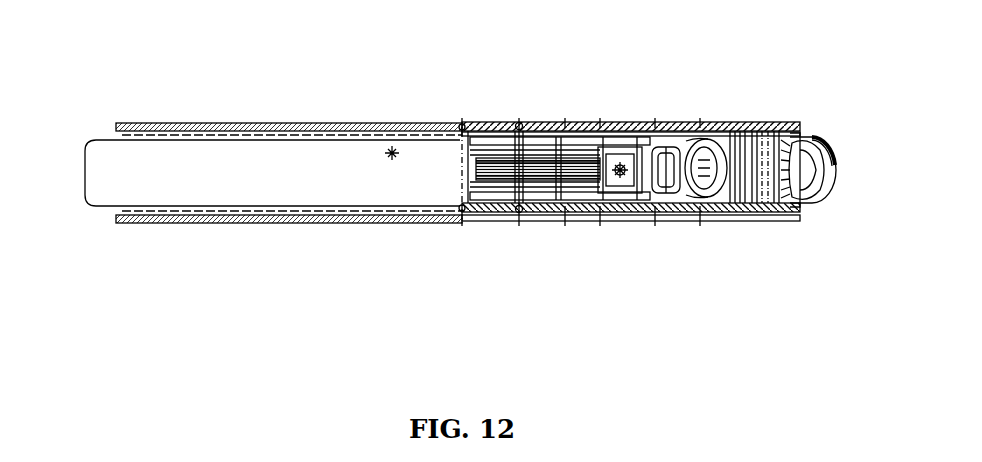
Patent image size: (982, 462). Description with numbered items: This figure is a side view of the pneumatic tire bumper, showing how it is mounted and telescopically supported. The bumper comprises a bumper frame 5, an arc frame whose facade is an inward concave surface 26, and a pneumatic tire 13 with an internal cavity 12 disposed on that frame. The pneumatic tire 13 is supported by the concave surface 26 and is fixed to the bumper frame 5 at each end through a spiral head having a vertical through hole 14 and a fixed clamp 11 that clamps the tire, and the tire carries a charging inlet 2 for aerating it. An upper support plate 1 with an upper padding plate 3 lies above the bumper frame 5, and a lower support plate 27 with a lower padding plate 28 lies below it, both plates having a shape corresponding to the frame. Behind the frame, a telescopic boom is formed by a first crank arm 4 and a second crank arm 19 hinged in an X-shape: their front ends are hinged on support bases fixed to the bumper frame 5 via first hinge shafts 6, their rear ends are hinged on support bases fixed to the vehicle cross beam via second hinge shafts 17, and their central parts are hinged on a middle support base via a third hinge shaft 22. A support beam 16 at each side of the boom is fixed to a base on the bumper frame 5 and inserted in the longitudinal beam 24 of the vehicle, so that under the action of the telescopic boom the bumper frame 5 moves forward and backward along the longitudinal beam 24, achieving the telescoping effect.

The upper support plate 1 is at (288, 128).
The charging inlet 2 is at (392, 150).
The upper padding plate 3 is at (788, 124).
The first crank arm 4 is at (505, 220).
The bumper frame 5 is at (728, 220).
The first hinge shaft 6 is at (598, 220).
The fixed clamp 11 is at (684, 220).
The cavity 12 is at (812, 192).
The pneumatic tire 13 is at (832, 192).
The through hole 14 is at (733, 125).
The support beam 16 is at (645, 220).
The second hinge shaft 17 is at (557, 222).
The second crank arm 19 is at (472, 220).
The third hinge shaft 22 is at (480, 123).
The longitudinal beam 24 is at (630, 124).
The concave surface 26 is at (812, 138).
The lower support plate 27 is at (305, 221).
The lower padding plate 28 is at (790, 218).